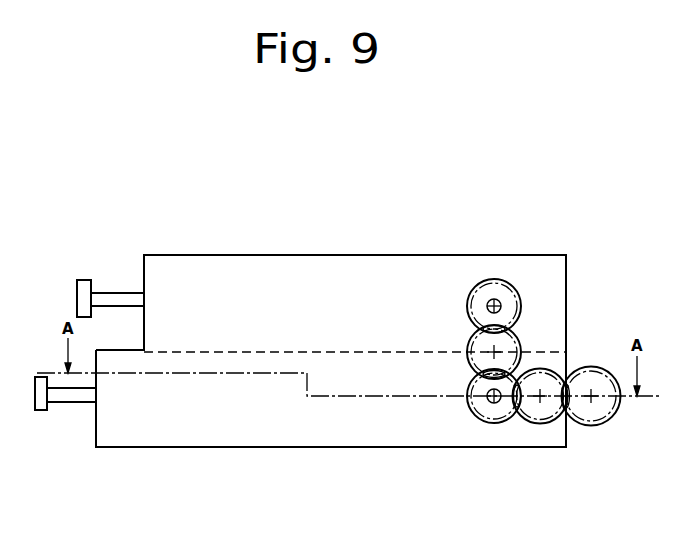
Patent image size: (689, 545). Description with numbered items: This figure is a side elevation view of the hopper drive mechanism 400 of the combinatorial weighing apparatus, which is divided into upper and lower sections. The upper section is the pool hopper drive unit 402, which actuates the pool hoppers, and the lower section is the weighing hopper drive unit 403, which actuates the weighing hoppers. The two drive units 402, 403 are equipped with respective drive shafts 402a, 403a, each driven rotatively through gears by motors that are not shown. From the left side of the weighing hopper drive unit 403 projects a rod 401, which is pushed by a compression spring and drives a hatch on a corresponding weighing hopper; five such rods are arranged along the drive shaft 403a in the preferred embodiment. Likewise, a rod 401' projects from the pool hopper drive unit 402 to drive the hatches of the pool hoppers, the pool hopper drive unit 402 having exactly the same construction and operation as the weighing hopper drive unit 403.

The hopper drive mechanism 400 is at (489, 231).
The rod 401 is at (65, 422).
The rod 401' is at (112, 267).
The pool hopper drive unit 402 is at (322, 262).
The drive shaft 402a is at (495, 300).
The weighing hopper drive unit 403 is at (327, 440).
The drive shaft 403a is at (494, 404).